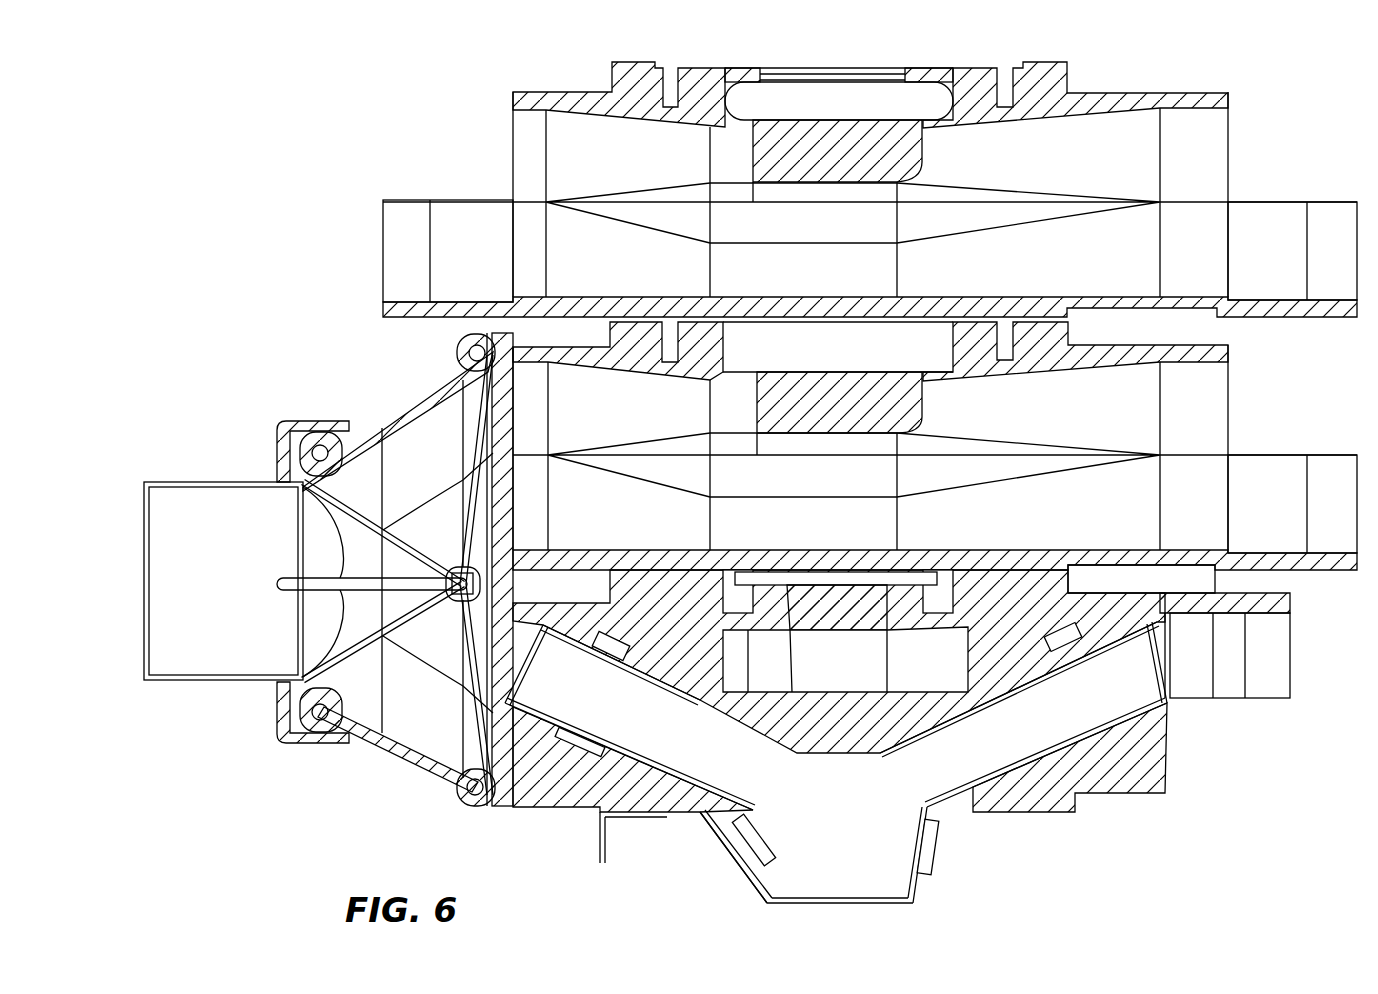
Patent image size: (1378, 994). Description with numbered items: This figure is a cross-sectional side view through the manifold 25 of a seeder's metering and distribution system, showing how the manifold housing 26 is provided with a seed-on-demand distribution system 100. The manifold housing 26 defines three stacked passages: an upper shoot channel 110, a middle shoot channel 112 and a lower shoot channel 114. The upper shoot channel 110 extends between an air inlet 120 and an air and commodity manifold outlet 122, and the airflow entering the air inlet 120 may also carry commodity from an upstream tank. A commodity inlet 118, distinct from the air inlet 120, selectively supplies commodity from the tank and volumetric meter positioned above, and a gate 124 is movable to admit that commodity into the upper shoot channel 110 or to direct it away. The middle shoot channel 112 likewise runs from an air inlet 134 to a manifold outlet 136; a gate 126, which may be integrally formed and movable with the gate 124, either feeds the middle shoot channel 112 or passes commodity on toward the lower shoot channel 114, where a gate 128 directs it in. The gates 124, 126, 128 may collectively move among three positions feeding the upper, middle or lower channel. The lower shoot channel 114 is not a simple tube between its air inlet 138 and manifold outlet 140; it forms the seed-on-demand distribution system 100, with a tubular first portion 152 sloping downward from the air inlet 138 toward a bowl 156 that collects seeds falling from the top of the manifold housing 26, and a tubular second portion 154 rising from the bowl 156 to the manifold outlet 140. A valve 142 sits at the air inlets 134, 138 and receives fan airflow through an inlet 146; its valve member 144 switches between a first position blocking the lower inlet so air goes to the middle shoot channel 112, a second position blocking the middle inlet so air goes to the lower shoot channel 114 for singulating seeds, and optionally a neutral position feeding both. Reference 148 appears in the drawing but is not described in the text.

The manifold 25 is at (335, 98).
The manifold housing 26 is at (1078, 93).
The seed-on-demand distribution system 100 is at (839, 714).
The upper shoot channel 110 is at (1245, 120).
The middle shoot channel 112 is at (1255, 378).
The lower shoot channel 114 is at (1246, 773).
The commodity inlet 118 is at (775, 68).
The air inlet 120 is at (510, 160).
The manifold outlet 122 is at (1232, 150).
The gate 124 is at (835, 130).
The gate 126 is at (840, 395).
The gate 128 is at (838, 605).
The air inlet 134 is at (502, 395).
The manifold outlet 136 is at (1232, 393).
The air inlet 138 is at (470, 796).
The manifold outlet 140 is at (1178, 657).
The valve 142 is at (380, 733).
The valve member 144 is at (300, 655).
The inlet 146 is at (143, 553).
The outlet assembly 148 is at (708, 855).
The first portion 152 is at (600, 735).
The second portion 154 is at (1072, 740).
The bowl 156 is at (843, 893).